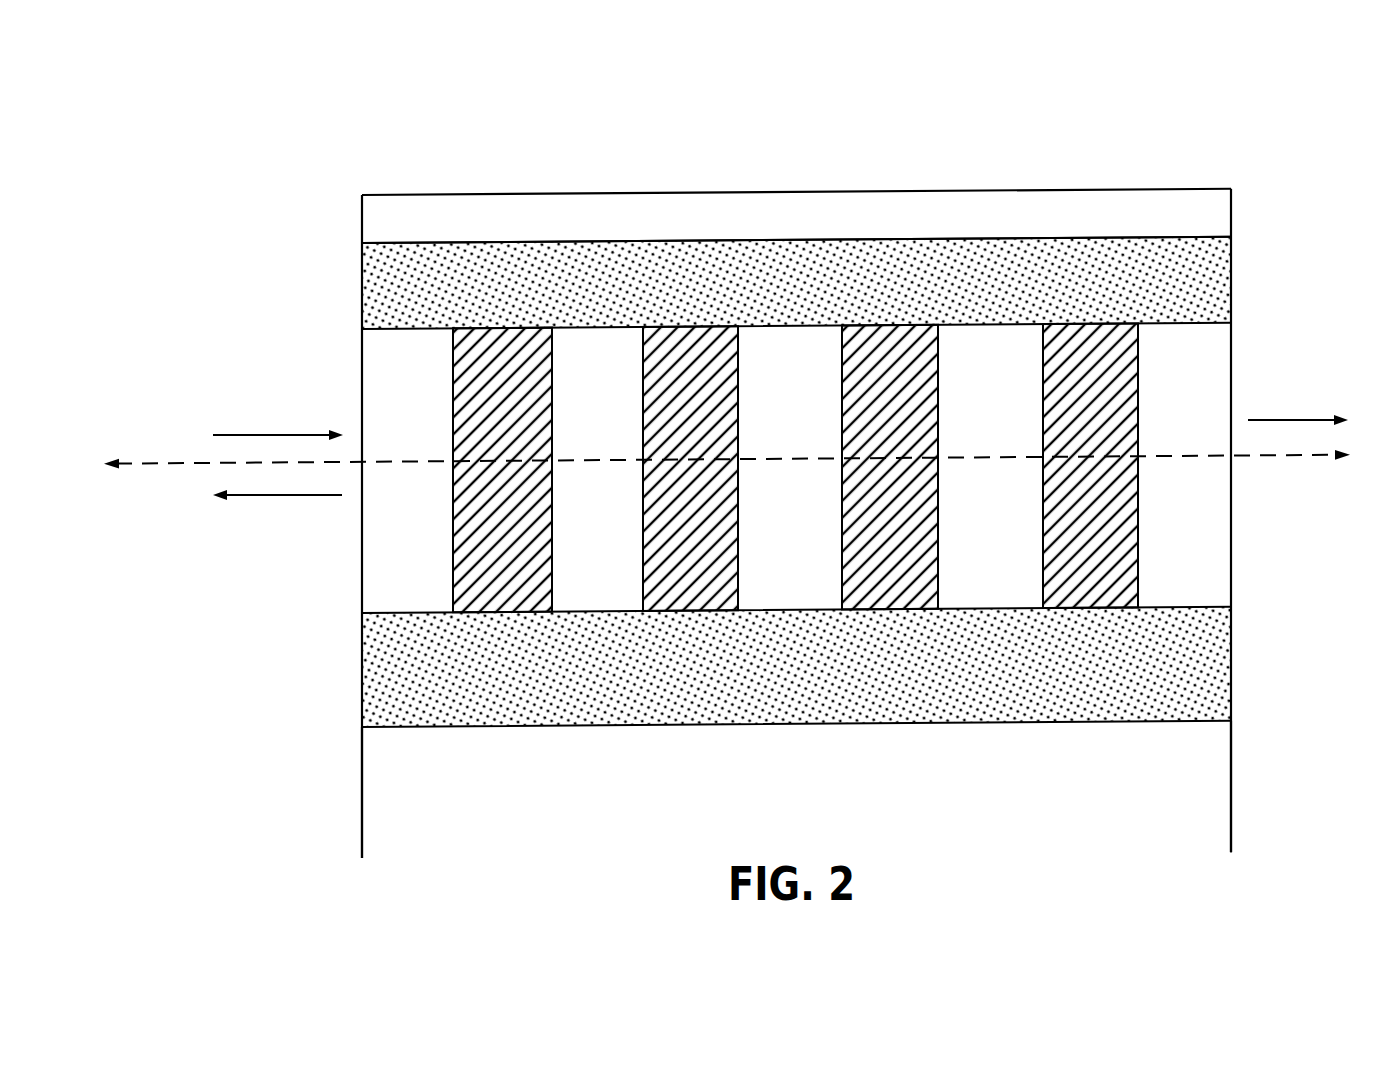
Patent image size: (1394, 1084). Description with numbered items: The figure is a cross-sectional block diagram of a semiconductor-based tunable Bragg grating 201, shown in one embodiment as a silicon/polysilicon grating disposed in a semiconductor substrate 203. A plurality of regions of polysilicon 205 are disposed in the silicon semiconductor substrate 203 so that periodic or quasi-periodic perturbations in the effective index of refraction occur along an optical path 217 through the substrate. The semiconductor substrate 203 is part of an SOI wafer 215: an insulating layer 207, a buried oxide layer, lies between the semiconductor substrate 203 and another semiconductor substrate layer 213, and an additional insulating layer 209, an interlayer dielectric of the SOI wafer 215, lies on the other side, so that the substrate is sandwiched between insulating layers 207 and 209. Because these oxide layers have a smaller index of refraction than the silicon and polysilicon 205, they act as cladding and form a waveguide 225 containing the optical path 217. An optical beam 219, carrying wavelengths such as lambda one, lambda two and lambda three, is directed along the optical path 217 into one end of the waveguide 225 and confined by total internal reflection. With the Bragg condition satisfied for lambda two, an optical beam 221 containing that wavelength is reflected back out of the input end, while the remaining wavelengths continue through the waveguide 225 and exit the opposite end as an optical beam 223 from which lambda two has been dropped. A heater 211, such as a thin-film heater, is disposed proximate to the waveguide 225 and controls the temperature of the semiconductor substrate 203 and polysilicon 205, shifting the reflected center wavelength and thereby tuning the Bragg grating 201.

The tunable Bragg grating 201 is at (1235, 110).
The semiconductor substrate 203 is at (422, 598).
The polysilicon regions 205 is at (518, 598).
The insulating layer 207 is at (1222, 657).
The insulating layer 209 is at (1222, 279).
The heater 211 is at (1221, 219).
The semiconductor substrate layer 213 is at (1222, 810).
The SOI wafer 215 is at (1224, 183).
The optical path 217 is at (138, 460).
The optical beam 219 is at (218, 428).
The optical beam 221 is at (248, 502).
The optical beam 223 is at (1320, 375).
The waveguide 225 is at (1244, 342).